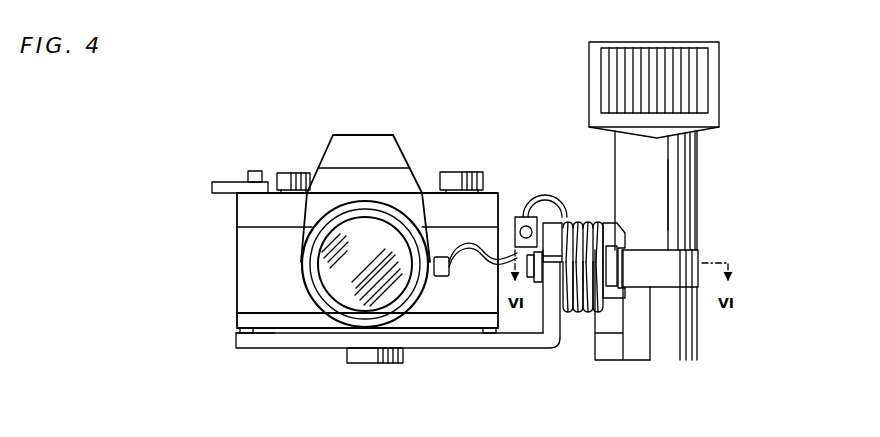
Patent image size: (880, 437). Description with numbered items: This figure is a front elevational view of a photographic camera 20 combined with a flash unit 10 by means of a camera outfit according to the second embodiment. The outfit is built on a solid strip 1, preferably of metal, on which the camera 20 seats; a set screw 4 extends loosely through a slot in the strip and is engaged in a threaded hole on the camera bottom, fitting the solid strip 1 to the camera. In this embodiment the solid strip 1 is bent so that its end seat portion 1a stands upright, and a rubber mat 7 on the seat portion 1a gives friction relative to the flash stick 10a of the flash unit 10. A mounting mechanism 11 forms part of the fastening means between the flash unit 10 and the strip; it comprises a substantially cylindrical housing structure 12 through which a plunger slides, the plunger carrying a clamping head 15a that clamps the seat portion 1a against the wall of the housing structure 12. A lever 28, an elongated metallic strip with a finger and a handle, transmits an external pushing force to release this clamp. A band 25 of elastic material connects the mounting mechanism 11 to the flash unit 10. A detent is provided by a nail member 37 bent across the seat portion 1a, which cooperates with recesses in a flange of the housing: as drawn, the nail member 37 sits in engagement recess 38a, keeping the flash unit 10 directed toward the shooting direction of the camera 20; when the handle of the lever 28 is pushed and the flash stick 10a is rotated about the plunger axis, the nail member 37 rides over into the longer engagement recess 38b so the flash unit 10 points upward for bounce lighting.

The solid strip 1 is at (288, 336).
The seat portion 1a is at (552, 322).
The set screw 4 is at (377, 349).
The rubber mat 7 is at (257, 330).
The flash unit 10 is at (693, 157).
The flash stick 10a is at (696, 182).
The mounting mechanism 11 is at (536, 218).
The housing structure 12 is at (608, 235).
The clamping head 15a is at (528, 263).
The photographic camera 20 is at (285, 169).
The band 25 is at (683, 273).
The lever 28 is at (614, 268).
The nail member 37 is at (537, 285).
The engagement recess 38a is at (572, 214).
The engagement recess 38b is at (578, 310).